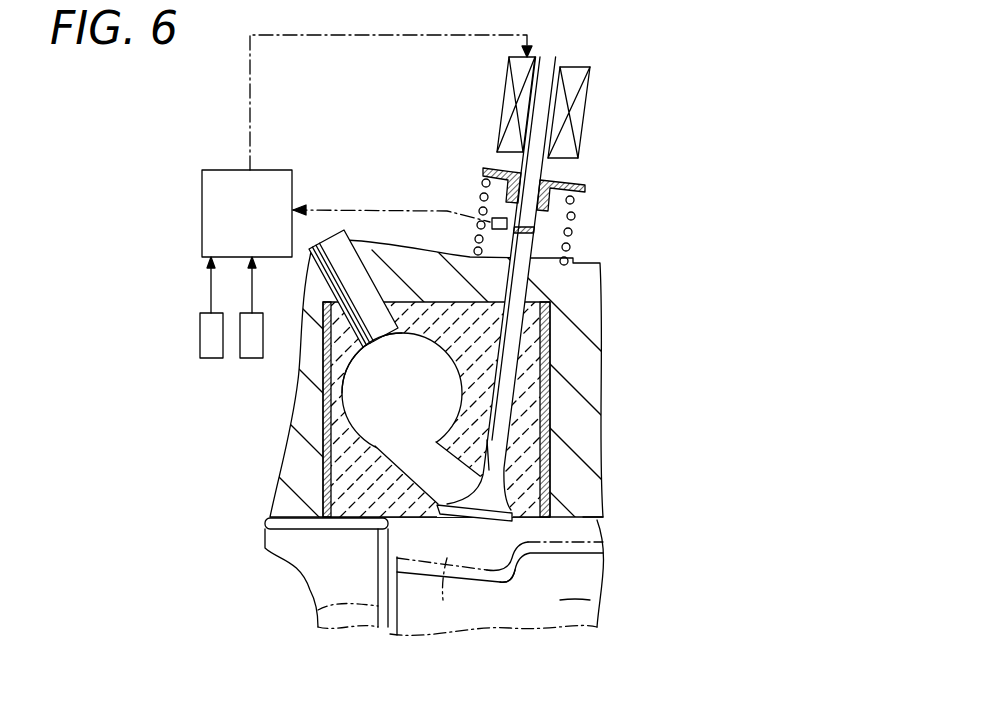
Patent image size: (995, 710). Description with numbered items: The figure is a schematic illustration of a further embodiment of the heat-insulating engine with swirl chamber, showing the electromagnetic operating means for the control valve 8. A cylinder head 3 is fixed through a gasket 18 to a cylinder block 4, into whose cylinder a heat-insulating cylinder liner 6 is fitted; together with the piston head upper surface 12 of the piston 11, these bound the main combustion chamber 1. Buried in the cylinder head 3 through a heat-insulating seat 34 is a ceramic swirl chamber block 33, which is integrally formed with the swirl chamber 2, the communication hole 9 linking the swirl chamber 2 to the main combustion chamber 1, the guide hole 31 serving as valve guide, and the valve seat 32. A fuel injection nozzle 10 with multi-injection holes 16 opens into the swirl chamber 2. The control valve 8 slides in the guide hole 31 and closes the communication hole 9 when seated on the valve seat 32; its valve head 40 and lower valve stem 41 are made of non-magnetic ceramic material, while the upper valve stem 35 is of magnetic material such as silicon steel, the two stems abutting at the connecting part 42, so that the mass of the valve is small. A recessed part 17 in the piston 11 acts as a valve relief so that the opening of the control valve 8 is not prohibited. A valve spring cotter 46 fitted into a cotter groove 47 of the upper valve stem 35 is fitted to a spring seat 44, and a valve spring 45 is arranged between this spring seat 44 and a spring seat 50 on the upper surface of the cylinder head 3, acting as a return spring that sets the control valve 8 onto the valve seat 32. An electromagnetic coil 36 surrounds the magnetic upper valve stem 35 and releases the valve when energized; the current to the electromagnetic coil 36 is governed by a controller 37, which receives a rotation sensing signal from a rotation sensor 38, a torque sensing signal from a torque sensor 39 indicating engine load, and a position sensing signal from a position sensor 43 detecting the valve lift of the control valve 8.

The main combustion chamber 1 is at (550, 530).
The swirl chamber 2 is at (365, 410).
The cylinder head 3 is at (282, 478).
The cylinder block 4 is at (308, 558).
The cylinder liner 6 is at (316, 613).
The control valve 8 is at (603, 498).
The communication hole 9 is at (422, 462).
The fuel injection nozzle 10 is at (312, 287).
The piston 11 is at (578, 600).
The piston head upper surface 12 is at (527, 563).
The multi-injection holes 16 is at (385, 350).
The recessed part 17 is at (443, 600).
The gasket 18 is at (265, 547).
The guide hole 31 is at (555, 370).
The valve seat 32 is at (590, 520).
The swirl chamber block 33 is at (508, 446).
The heat-insulating seat 34 is at (325, 395).
The upper valve stem 35 is at (546, 137).
The electromagnetic coil 36 is at (572, 62).
The controller 37 is at (278, 182).
The rotation sensor 38 is at (215, 348).
The torque sensor 39 is at (253, 348).
The valve head 40 is at (472, 517).
The lower valve stem 41 is at (507, 324).
The connecting part 42 is at (537, 229).
The position sensor 43 is at (490, 218).
The spring seat 44 is at (520, 174).
The valve spring 45 is at (572, 235).
The valve spring cotter 46 is at (560, 180).
The cotter groove 47 is at (512, 167).
The spring seat 50 is at (470, 222).